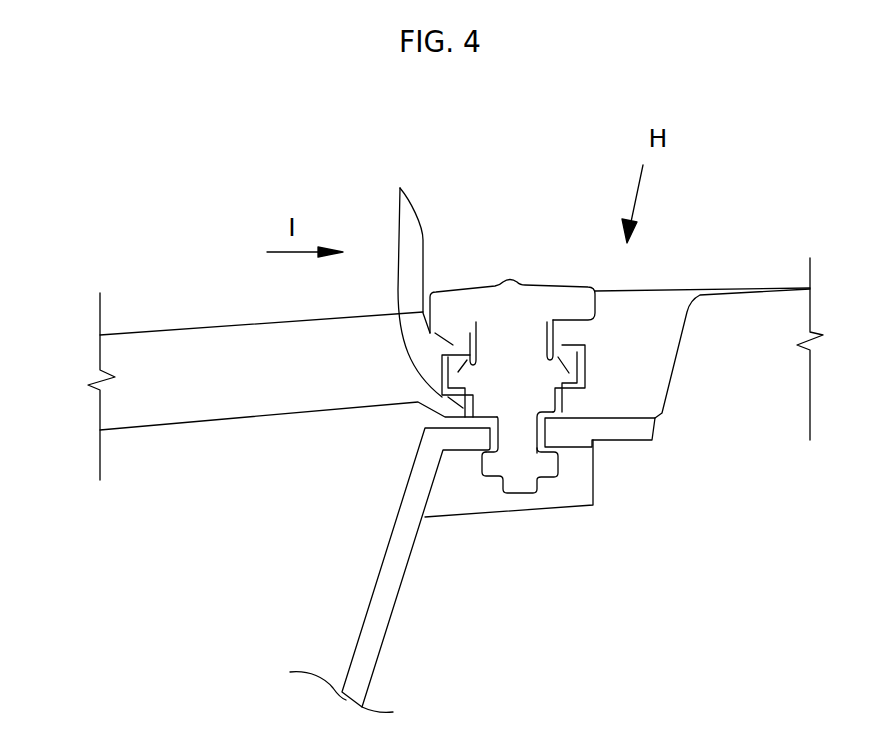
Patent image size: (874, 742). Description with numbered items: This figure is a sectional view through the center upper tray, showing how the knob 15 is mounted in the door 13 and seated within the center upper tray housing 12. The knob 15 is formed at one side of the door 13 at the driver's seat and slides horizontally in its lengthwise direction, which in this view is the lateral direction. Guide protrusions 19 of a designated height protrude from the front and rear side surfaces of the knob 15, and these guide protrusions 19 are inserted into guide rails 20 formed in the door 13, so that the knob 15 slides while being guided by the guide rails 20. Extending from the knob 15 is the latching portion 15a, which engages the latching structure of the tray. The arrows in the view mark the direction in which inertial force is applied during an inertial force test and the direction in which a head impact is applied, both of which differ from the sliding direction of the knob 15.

The center upper tray housing 12 is at (390, 573).
The door 13 is at (215, 368).
The knob 15 is at (518, 320).
The latching portion 15a is at (518, 468).
The guide protrusions 19 is at (471, 333).
The guide rails 20 is at (714, 218).